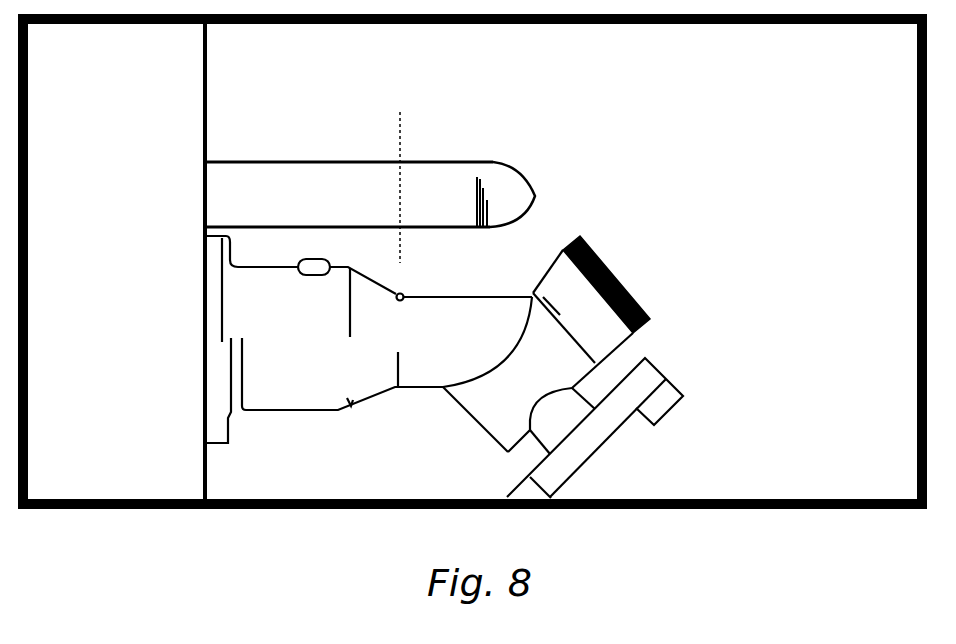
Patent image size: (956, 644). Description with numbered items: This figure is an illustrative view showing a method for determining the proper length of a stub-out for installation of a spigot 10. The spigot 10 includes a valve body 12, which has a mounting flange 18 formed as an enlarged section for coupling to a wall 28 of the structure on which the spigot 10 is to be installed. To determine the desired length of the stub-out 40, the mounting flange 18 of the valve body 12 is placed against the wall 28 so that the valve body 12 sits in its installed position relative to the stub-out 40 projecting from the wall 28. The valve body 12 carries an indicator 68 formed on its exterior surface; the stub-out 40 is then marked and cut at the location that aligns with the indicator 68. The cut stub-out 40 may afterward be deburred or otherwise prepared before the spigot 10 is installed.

The spigot 10 is at (680, 234).
The valve body 12 is at (323, 413).
The mounting flange 18 is at (228, 445).
The wall 28 is at (207, 72).
The stub-out 40 is at (480, 162).
The indicator 68 is at (402, 293).